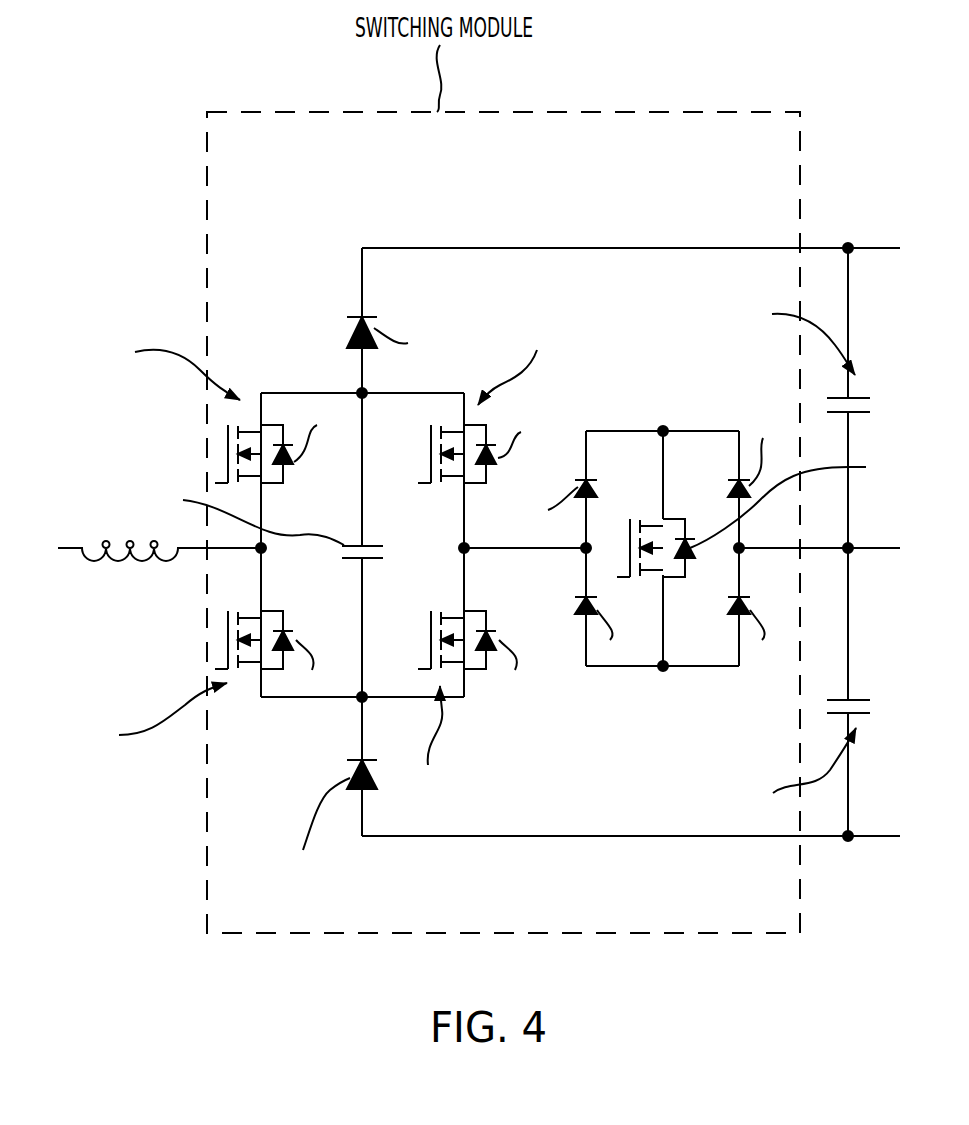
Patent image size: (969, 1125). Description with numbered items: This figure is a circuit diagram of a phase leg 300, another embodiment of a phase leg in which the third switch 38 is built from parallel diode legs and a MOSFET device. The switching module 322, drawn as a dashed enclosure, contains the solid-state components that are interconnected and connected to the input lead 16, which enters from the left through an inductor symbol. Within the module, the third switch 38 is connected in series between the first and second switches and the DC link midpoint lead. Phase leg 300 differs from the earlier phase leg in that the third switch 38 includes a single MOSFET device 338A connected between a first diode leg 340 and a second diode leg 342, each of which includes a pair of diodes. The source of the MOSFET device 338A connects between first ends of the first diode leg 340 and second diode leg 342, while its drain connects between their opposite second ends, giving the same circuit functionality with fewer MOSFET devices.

The phase leg 300 is at (285, 970).
The switching module 322 is at (268, 158).
The input lead 16 is at (222, 550).
The third switch 38 is at (641, 581).
The transistor switch 338A is at (672, 530).
The first diode leg 340 is at (568, 588).
The second diode leg 342 is at (723, 578).